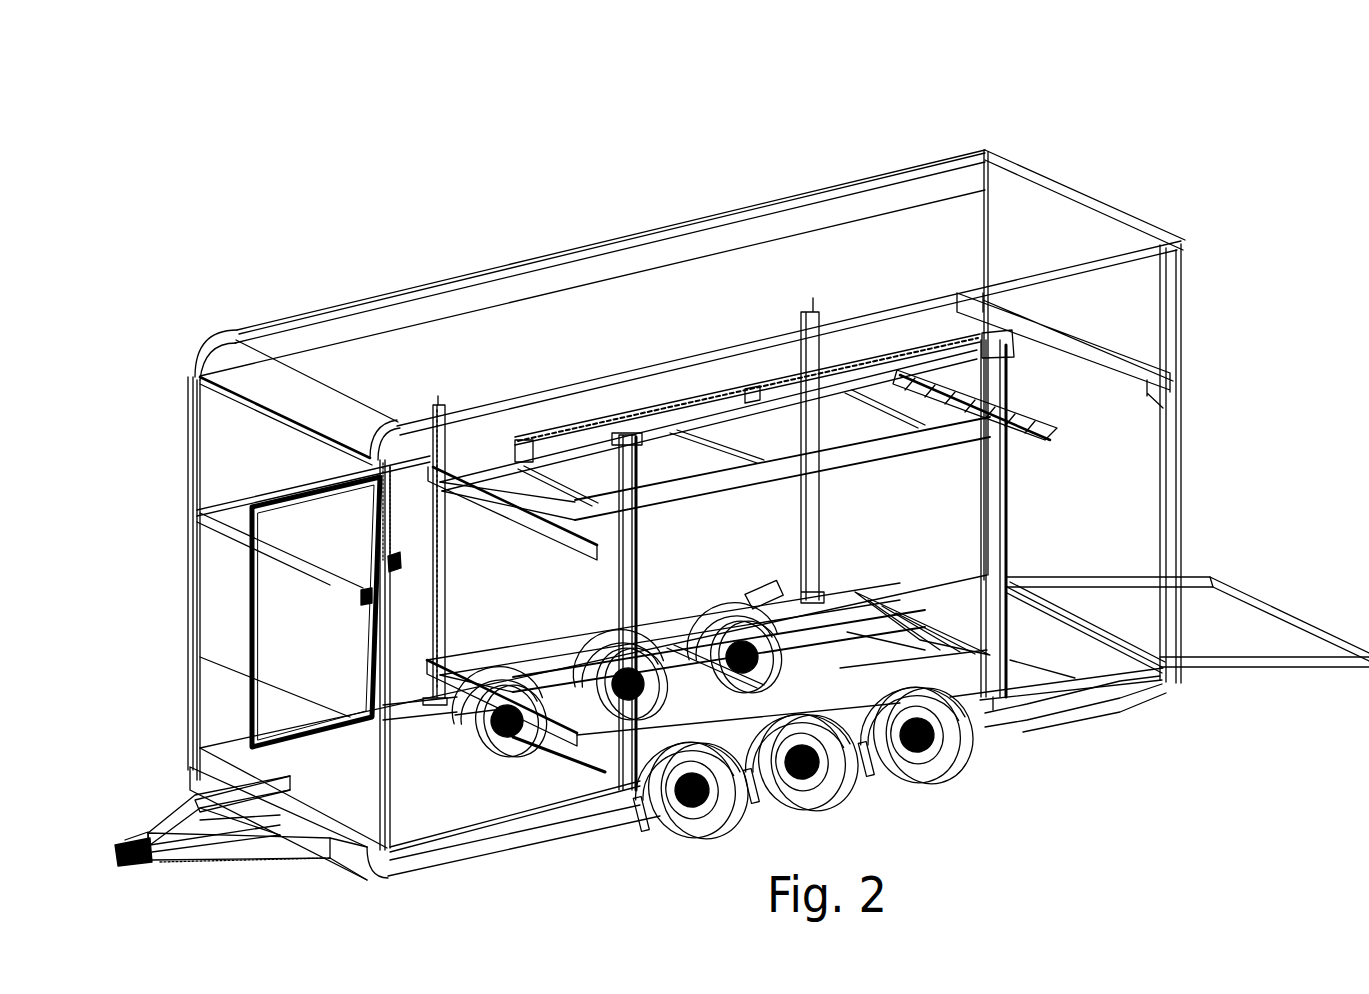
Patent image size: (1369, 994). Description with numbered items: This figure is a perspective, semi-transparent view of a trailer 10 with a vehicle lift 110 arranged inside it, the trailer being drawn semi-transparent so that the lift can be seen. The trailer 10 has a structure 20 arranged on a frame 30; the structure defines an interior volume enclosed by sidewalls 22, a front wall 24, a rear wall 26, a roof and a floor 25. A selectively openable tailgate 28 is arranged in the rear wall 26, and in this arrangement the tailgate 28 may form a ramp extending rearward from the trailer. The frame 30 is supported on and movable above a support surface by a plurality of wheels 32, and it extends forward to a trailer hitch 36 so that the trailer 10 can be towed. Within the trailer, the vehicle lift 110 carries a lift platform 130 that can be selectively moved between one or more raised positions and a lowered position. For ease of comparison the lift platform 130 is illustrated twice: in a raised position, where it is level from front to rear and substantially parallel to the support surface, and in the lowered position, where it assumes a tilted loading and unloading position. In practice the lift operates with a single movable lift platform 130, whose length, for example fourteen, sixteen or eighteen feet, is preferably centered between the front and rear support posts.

The trailer 10 is at (758, 88).
The structure 20 is at (449, 312).
The sidewalls 22 is at (164, 390).
The front wall 24 is at (208, 604).
The floor 25 is at (341, 798).
The rear wall 26 is at (1142, 190).
The tailgate 28 is at (1252, 618).
The frame 30 is at (257, 848).
The wheels 32 is at (700, 838).
The trailer hitch 36 is at (133, 837).
The vehicle lift 110 is at (434, 745).
The lift platform 130 is at (953, 440).